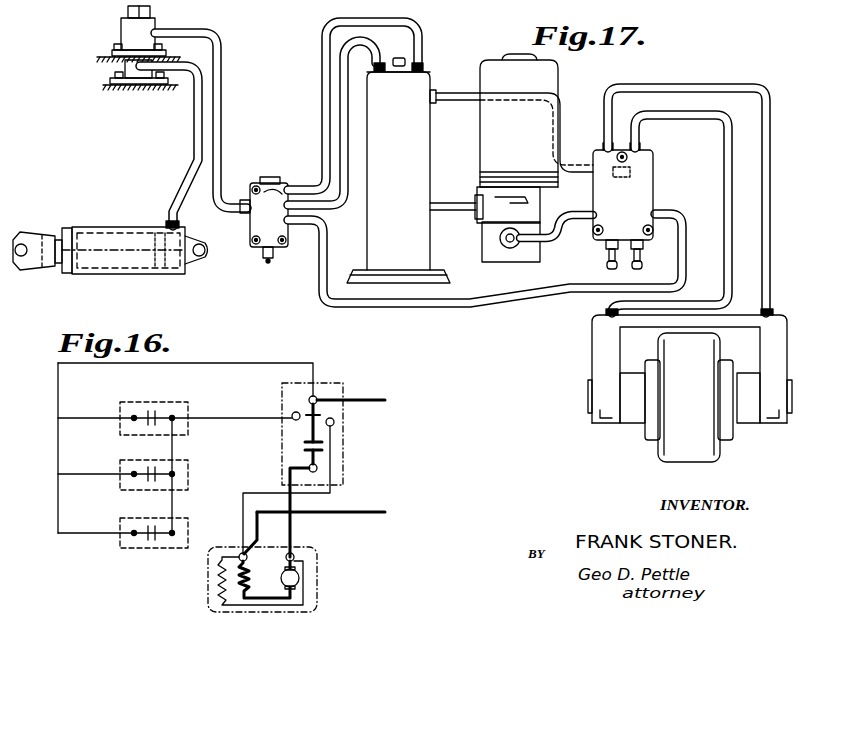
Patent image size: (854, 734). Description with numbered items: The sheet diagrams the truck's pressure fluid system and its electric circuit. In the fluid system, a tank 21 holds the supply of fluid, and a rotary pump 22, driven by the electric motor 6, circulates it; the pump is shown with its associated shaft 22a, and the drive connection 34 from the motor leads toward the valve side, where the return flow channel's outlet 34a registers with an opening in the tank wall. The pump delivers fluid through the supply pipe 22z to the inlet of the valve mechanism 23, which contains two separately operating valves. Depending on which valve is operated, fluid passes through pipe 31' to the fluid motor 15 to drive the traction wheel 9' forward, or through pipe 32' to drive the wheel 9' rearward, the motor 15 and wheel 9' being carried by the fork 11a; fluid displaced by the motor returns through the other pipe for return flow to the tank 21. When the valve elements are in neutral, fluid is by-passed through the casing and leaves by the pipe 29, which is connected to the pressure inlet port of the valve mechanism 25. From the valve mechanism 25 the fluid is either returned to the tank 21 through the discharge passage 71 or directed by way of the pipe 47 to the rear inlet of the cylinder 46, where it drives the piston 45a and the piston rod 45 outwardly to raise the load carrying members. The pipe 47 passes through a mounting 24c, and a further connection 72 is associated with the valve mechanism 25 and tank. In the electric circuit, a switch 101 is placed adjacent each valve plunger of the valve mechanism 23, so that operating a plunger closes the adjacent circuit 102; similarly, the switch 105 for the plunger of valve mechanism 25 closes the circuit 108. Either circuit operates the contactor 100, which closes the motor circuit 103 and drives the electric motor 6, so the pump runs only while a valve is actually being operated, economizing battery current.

In FIG. 17, the mounting bracket 24c is at (100, 57).
In FIG. 17, the fluid supply pipe 47 is at (193, 31).
In FIG. 17, the cylinder 46 is at (107, 237).
In FIG. 17, the piston rod 45 is at (133, 262).
In FIG. 17, the piston 45a is at (150, 228).
In FIG. 17, the valve mechanism 25 is at (250, 226).
In FIG. 17, the discharge passage 71 is at (322, 97).
In FIG. 17, the conduit 72 is at (345, 161).
In FIG. 17, the pipe 29 is at (328, 239).
In FIG. 17, the tank 21 is at (432, 163).
In FIG. 17, the return flow channel 34 is at (451, 93).
In FIG. 17, the electric motor 6 is at (480, 121).
In FIG. 16, the electric motor 6 is at (320, 580).
In FIG. 17, the shaft 22a is at (458, 212).
In FIG. 17, the rotary pump 22 is at (495, 247).
In FIG. 17, the supply pipe 22z is at (565, 233).
In FIG. 17, the valve mechanism 23 is at (655, 190).
In FIG. 17, the outlet 34a is at (631, 171).
In FIG. 17, the pipe 31' is at (701, 201).
In FIG. 17, the pipe 32' is at (682, 215).
In FIG. 17, the wheel fork 11a is at (592, 357).
In FIG. 17, the motor 15 is at (655, 415).
In FIG. 17, the traction wheel 9' is at (701, 398).
In FIG. 16, the circuit 108 is at (98, 418).
In FIG. 16, the switch 105 is at (157, 411).
In FIG. 16, the switch 101 is at (157, 468).
In FIG. 16, the circuit 102 is at (98, 474).
In FIG. 16, the contactor 100 is at (335, 413).
In FIG. 16, the motor circuit 103 is at (378, 511).